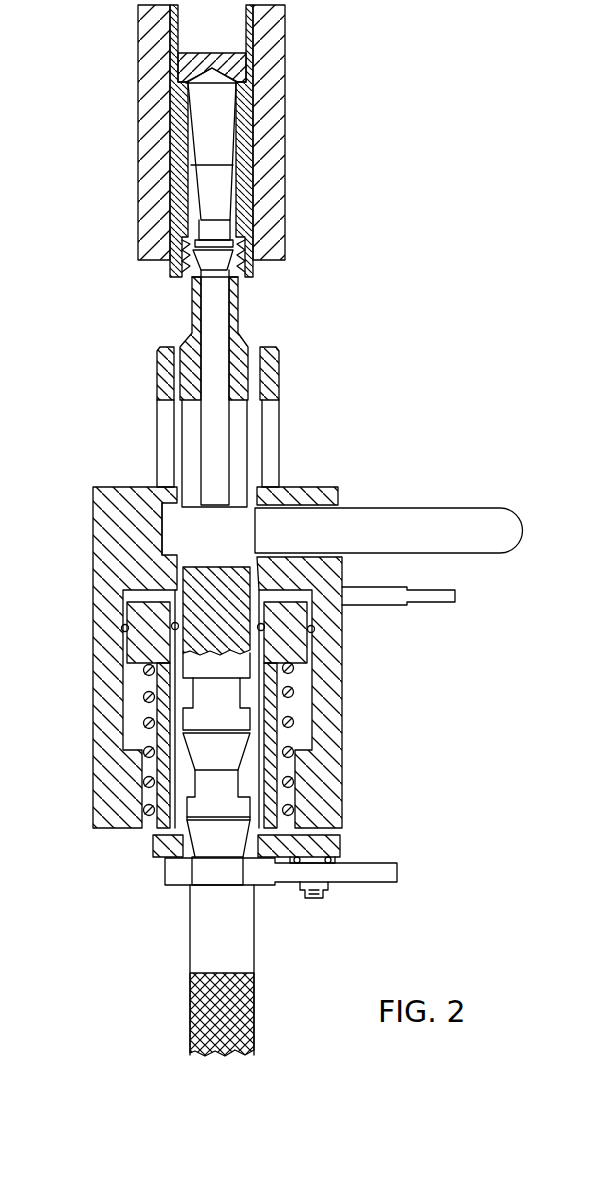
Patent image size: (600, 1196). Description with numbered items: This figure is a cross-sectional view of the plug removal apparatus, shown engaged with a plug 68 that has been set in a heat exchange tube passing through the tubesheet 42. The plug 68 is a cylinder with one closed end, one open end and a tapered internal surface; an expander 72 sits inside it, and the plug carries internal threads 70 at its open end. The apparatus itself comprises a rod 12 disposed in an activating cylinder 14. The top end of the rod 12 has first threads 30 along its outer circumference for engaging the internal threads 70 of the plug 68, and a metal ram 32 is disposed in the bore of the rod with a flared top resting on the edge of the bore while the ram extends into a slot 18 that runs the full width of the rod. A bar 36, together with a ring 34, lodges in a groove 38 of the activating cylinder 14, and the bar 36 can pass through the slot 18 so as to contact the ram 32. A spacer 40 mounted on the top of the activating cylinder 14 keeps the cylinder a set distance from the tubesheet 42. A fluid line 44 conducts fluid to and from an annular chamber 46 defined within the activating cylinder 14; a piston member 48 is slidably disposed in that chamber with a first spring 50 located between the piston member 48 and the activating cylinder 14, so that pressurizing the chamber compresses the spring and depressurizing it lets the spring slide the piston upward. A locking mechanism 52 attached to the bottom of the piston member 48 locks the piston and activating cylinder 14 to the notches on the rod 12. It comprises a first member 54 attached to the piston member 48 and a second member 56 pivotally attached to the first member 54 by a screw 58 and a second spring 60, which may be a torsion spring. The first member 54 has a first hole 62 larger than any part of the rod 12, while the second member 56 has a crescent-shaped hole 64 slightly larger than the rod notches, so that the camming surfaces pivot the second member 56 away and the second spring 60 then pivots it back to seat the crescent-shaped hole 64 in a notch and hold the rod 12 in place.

The rod 12 is at (241, 327).
The activating cylinder 14 is at (100, 750).
The slot 18 is at (234, 410).
The first threads 30 is at (249, 283).
The ram 32 is at (208, 300).
The ring 34 is at (329, 507).
The bar 36 is at (453, 521).
The groove 38 is at (163, 521).
The spacer 40 is at (271, 365).
The tubesheet 42 is at (274, 180).
The fluid line 44 is at (433, 603).
The annular chamber 46 is at (127, 592).
The piston member 48 is at (137, 640).
The first spring 50 is at (298, 723).
The locking mechanism 52 is at (323, 901).
The first member 54 is at (330, 845).
The second member 56 is at (385, 872).
The screw 58 is at (297, 888).
The second spring 60 is at (334, 865).
The first hole 62 is at (190, 848).
The crescent-shaped hole 64 is at (195, 886).
The plug 68 is at (243, 68).
The internal threads 70 is at (255, 250).
The expander 72 is at (216, 180).